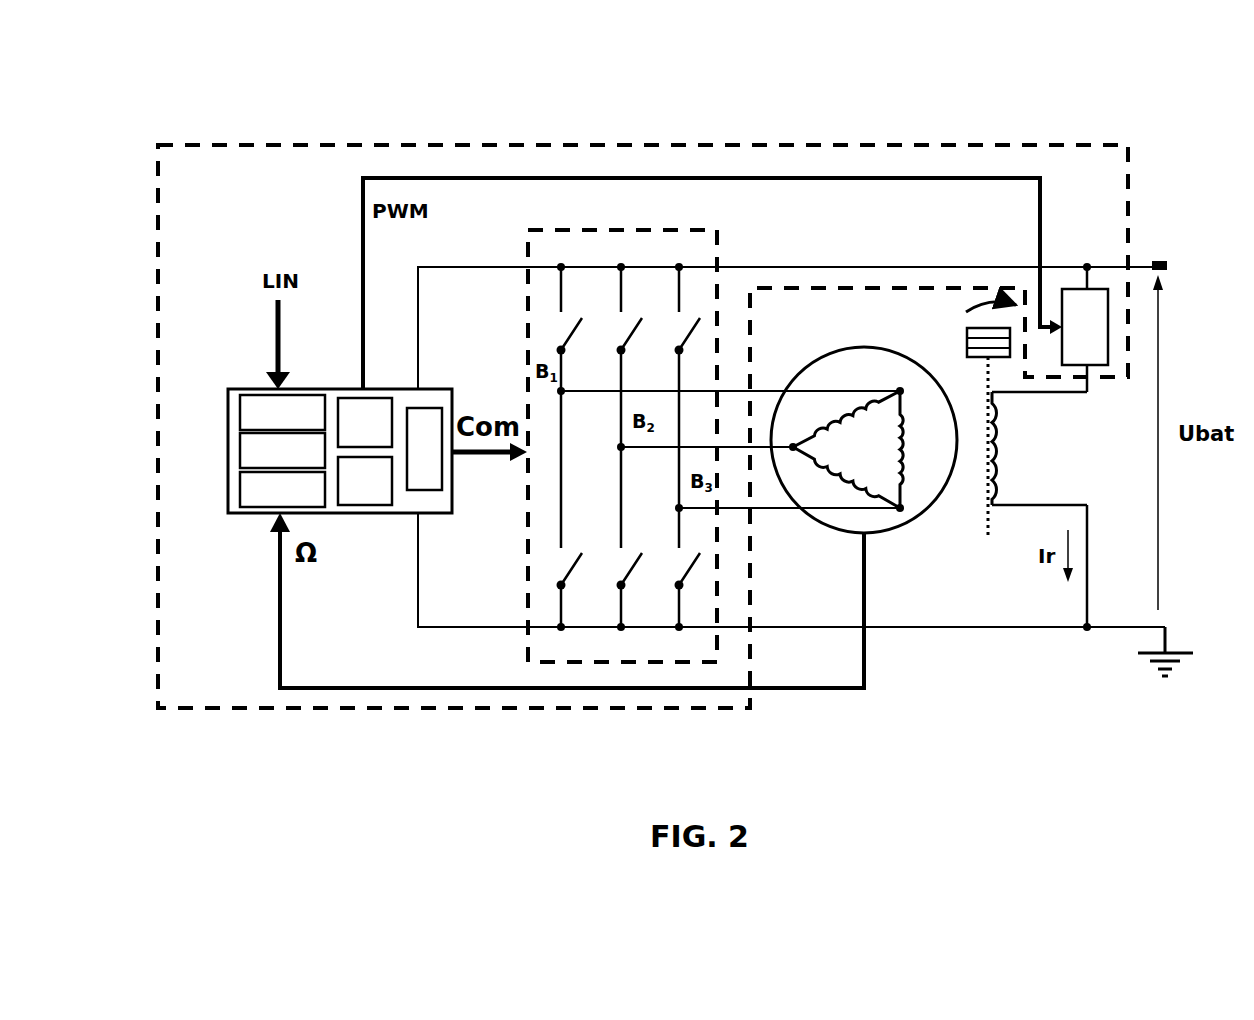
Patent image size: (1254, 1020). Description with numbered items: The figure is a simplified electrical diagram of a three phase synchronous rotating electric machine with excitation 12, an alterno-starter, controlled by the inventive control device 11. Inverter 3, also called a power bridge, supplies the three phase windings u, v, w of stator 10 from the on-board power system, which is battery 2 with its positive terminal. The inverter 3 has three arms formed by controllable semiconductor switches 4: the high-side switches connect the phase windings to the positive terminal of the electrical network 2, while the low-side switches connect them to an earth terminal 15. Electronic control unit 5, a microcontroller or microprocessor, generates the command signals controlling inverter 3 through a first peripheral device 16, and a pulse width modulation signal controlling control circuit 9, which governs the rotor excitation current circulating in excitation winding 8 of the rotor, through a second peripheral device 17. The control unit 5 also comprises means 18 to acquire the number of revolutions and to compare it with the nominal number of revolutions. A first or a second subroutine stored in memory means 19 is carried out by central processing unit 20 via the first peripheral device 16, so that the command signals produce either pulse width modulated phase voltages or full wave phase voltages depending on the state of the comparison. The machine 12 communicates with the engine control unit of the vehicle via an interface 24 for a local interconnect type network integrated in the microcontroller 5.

The battery 2 is at (1145, 262).
The power bridge 3 is at (652, 224).
The controllable semiconductor switches 4 is at (571, 337).
The electronic control unit 5 is at (342, 448).
The excitation winding 8 is at (1000, 462).
The control circuit 9 is at (1093, 368).
The stator 10 is at (908, 522).
The control device 11 is at (495, 138).
The three phase rotating electric machine with excitation 12 is at (704, 389).
The earth terminal 15 is at (1168, 633).
The first peripheral device 16 is at (432, 475).
The second peripheral device 17 is at (380, 410).
The means to acquire the number of revolutions 18 is at (258, 488).
The memory means 19 is at (250, 450).
The central processing unit 20 is at (366, 495).
The interface 24 is at (262, 405).